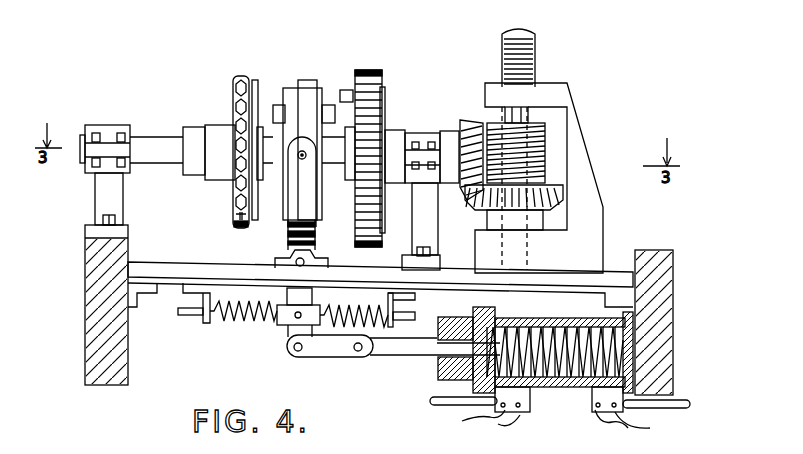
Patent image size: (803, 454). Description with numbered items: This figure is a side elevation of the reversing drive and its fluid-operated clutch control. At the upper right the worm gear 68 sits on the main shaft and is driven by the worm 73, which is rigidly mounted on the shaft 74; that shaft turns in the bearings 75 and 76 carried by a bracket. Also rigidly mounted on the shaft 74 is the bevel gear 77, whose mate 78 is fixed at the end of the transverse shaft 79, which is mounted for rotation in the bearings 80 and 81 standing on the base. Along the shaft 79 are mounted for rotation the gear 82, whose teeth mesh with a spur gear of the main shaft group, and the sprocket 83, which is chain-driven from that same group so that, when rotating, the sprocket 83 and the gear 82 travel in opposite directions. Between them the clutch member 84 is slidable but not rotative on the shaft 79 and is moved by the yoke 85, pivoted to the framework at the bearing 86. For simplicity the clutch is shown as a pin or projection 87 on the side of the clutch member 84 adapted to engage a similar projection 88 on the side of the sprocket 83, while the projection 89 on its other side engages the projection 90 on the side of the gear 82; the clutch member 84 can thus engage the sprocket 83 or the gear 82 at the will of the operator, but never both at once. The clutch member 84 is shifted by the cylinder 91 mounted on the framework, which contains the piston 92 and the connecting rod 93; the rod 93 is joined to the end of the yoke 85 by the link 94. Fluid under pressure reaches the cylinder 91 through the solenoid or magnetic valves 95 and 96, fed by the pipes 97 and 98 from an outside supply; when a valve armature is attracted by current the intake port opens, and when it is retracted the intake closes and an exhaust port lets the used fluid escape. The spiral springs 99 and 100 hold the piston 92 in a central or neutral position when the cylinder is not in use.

The worm gear 68 is at (536, 47).
The worm 73 is at (546, 146).
The shaft 74 is at (527, 118).
The bearing 75 is at (530, 253).
The bearing 76 is at (522, 96).
The bevel gear 77 is at (549, 204).
The bevel gear 78 is at (465, 128).
The shaft 79 is at (157, 148).
The bearing 80 is at (108, 133).
The bearing 81 is at (420, 136).
The gear 82 is at (374, 96).
The sprocket 83 is at (238, 108).
The clutch member 84 is at (291, 92).
The yoke 85 is at (303, 230).
The bearing 86 is at (281, 261).
The pin or projection 87 is at (278, 104).
The projection 88 is at (262, 78).
The projection 89 is at (328, 104).
The projection 90 is at (346, 90).
The cylinder 91 is at (590, 303).
The piston 92 is at (558, 307).
The connecting rod 93 is at (403, 357).
The link 94 is at (341, 358).
The solenoid or magnetic valve 95 is at (522, 410).
The solenoid or magnetic valve 96 is at (592, 408).
The pipe 97 is at (448, 403).
The pipe 98 is at (665, 408).
The spiral spring 99 is at (236, 310).
The spiral spring 100 is at (372, 314).